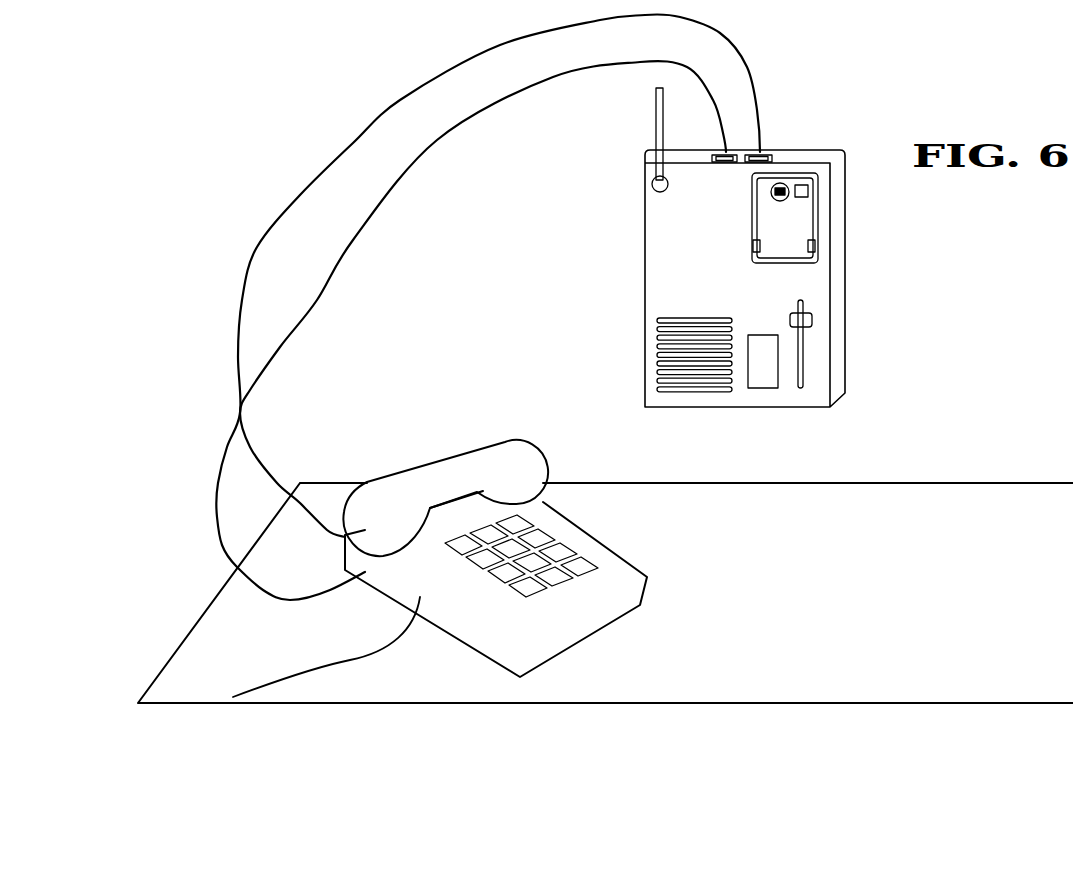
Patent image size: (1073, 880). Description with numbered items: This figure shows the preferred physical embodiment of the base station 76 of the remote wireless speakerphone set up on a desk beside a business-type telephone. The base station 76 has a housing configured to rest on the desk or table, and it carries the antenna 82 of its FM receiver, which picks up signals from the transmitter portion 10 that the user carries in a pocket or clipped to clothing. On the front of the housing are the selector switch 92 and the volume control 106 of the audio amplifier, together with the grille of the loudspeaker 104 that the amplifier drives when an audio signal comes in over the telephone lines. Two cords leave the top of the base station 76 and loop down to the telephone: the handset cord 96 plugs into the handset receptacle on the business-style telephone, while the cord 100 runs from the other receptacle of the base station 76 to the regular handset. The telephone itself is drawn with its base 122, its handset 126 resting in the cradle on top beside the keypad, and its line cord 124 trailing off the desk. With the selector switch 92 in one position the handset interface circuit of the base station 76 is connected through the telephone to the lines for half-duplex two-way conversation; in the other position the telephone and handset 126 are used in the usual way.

The transmitter portion 10 is at (803, 225).
The base station 76 is at (840, 252).
The antenna 82 is at (658, 133).
The selector switch 92 is at (770, 377).
The handset cord 96 is at (220, 470).
The cord 100 is at (253, 445).
The loudspeaker 104 is at (688, 377).
The volume control 106 is at (803, 323).
The telephone base 122 is at (613, 577).
The telephone line cord 124 is at (317, 665).
The telephone handset 126 is at (505, 462).